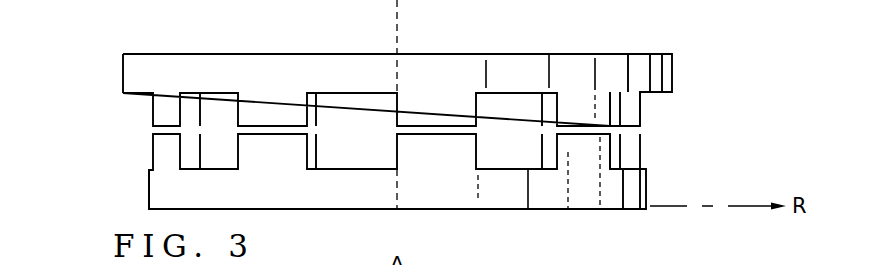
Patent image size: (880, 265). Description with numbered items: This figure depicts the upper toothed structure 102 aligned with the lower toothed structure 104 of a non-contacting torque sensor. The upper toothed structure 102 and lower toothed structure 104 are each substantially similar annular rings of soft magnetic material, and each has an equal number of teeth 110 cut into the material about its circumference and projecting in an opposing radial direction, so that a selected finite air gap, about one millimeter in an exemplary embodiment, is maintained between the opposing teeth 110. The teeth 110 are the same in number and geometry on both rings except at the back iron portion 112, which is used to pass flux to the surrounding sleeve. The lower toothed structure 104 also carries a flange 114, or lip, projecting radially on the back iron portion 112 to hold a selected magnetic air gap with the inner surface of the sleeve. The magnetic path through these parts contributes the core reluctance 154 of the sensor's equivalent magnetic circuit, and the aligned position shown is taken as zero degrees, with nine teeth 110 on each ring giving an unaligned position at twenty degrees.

The upper toothed structure 102 is at (647, 193).
The lower toothed structure 104 is at (672, 70).
The teeth 110 is at (577, 98).
The back iron portion 112 is at (123, 81).
The flange 114 is at (123, 60).
The core reluctance 154 is at (153, 129).